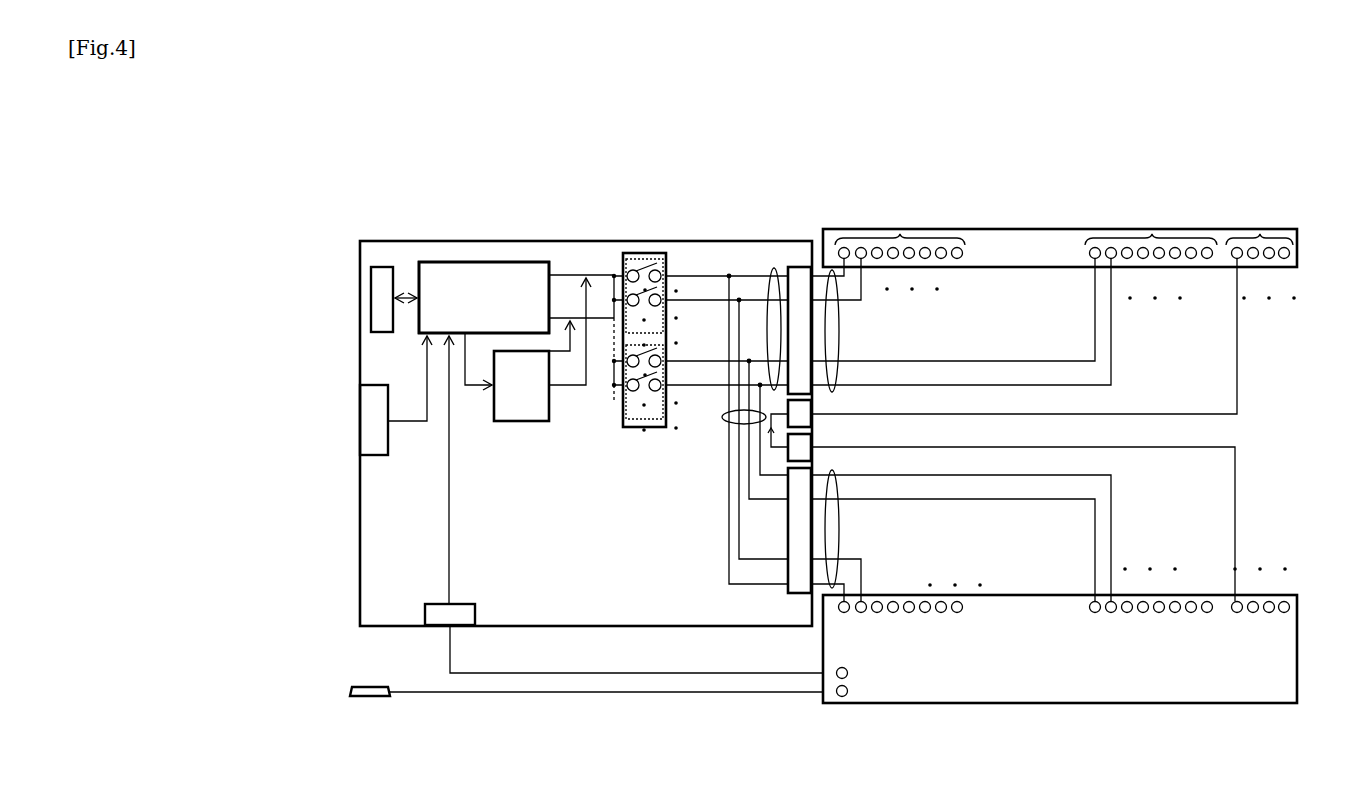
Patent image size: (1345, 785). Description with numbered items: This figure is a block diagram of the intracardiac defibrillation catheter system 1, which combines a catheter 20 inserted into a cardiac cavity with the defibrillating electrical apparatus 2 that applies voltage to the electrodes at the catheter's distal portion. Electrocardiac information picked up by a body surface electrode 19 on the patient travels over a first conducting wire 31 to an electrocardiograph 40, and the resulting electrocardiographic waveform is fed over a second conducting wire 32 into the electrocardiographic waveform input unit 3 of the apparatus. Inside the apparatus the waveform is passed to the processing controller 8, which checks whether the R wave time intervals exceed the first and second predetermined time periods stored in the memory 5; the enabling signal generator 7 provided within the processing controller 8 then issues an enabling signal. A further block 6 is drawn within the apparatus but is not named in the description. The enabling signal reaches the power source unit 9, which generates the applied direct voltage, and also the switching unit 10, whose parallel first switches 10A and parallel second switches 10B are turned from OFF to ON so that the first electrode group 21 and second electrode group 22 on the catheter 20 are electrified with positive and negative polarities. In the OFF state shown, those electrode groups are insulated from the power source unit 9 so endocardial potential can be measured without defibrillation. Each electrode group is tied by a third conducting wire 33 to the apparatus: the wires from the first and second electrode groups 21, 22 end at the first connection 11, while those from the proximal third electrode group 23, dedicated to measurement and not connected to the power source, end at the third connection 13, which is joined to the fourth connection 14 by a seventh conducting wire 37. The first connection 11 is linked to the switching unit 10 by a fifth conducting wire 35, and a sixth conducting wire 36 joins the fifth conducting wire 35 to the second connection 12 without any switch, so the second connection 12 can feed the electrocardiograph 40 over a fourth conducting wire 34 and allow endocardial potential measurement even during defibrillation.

The defibrillation catheter system 1 is at (781, 166).
The defibrillating electrical apparatus 2 is at (408, 240).
The electrocardiographic waveform input unit 3 is at (432, 628).
The memory 5 is at (371, 298).
The power supply unit 6 is at (360, 418).
The enabling signal generator 7 is at (457, 261).
The processing controller 8 is at (497, 261).
The power source unit 9 is at (550, 407).
The switching unit 10 is at (678, 337).
The first switch 10A is at (665, 290).
The second switch 10B is at (667, 384).
The first connection 11 is at (800, 267).
The second connection 12 is at (803, 594).
The third connection 13 is at (812, 407).
The fourth connection 14 is at (812, 458).
The body surface electrode 19 is at (378, 698).
The catheter 20 is at (1076, 243).
The first electrode group 21 is at (900, 228).
The second electrode group 22 is at (1151, 228).
The third electrode group 23 is at (1307, 211).
The first conducting wire 31 is at (615, 695).
The second conducting wire 32 is at (614, 672).
The third conducting wire 33 is at (840, 316).
The fourth conducting wire 34 is at (840, 538).
The fifth conducting wire 35 is at (774, 268).
The sixth conducting wire 36 is at (727, 425).
The seventh conducting wire 37 is at (770, 440).
The electrocardiograph 40 is at (1076, 704).